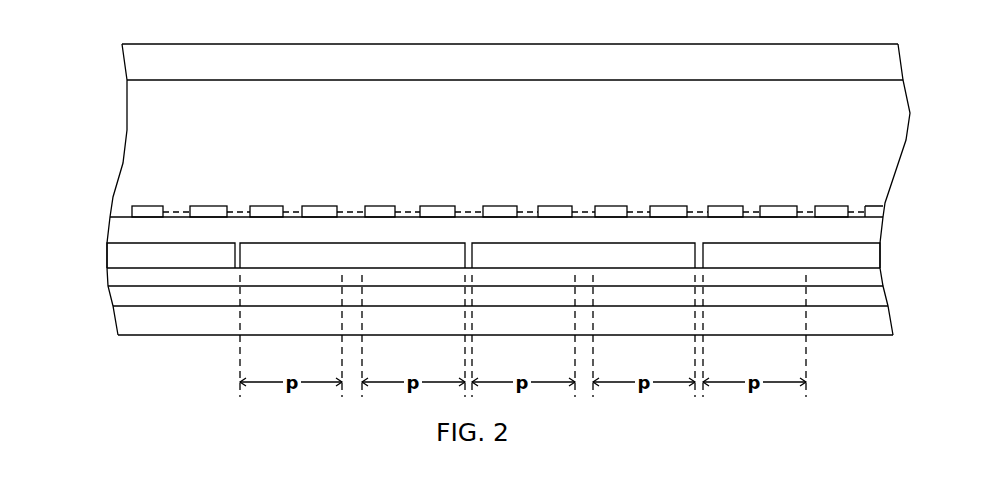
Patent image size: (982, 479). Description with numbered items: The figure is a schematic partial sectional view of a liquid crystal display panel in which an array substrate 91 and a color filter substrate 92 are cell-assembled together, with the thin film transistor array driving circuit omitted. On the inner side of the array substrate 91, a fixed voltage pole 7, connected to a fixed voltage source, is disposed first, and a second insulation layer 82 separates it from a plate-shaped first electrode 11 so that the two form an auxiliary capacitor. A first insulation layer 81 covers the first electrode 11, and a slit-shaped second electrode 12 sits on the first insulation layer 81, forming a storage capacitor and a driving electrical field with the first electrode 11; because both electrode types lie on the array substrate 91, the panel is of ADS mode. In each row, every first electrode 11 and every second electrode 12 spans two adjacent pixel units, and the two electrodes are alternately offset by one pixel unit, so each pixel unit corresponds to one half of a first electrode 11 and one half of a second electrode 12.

The color filter substrate 92 is at (140, 63).
The second electrode 12 is at (313, 210).
The first electrode 11 is at (402, 262).
The first insulation layer 81 is at (127, 231).
The second insulation layer 82 is at (121, 278).
The fixed voltage pole 7 is at (121, 297).
The array substrate 91 is at (128, 322).